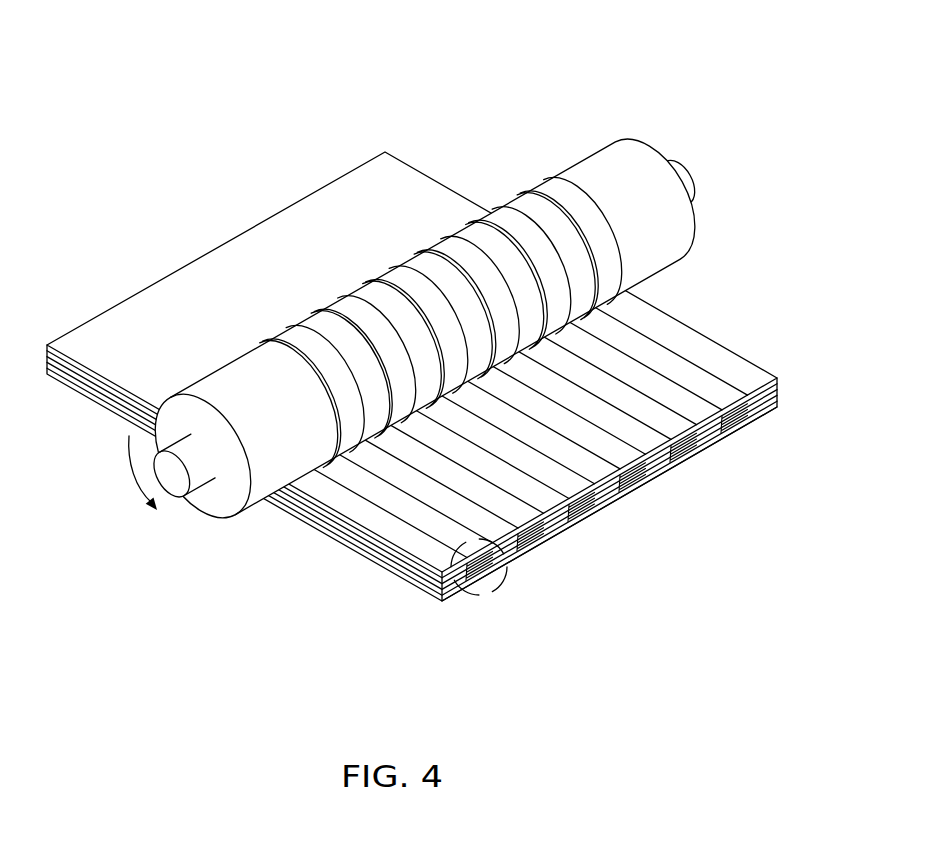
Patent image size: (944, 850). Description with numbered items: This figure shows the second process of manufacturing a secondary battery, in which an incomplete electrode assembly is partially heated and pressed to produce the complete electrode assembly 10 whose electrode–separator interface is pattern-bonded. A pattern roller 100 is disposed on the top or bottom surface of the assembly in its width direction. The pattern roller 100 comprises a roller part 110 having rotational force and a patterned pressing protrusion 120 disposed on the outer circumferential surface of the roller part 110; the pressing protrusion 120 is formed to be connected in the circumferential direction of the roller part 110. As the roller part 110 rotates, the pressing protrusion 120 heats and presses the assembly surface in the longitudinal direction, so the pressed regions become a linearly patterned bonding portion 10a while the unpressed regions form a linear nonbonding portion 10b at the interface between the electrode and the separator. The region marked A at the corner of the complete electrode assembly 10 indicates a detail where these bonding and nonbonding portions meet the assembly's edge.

The complete electrode assembly 10 is at (431, 376).
The bonding portion 10a is at (747, 427).
The nonbonding portion 10b is at (720, 437).
The pattern roller 100 is at (415, 269).
The roller part 110 is at (627, 160).
The pressing protrusion 120 is at (429, 266).
The detail region A is at (503, 588).